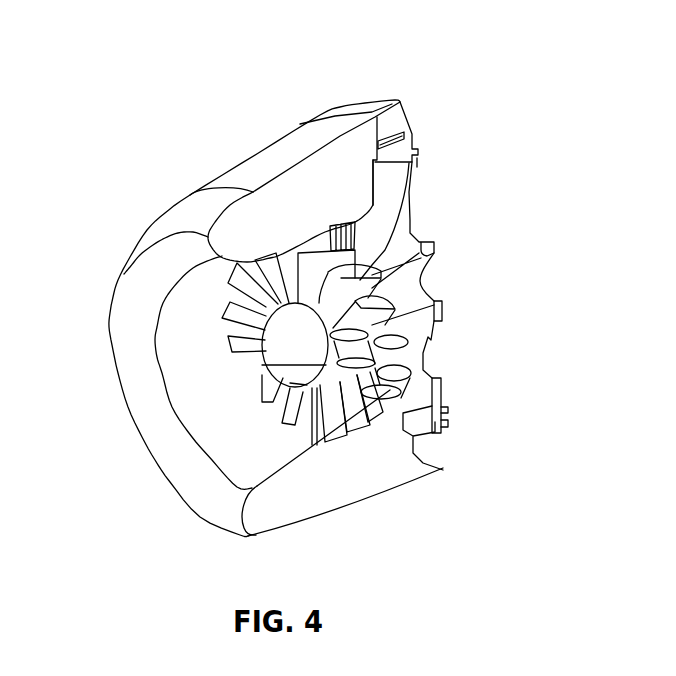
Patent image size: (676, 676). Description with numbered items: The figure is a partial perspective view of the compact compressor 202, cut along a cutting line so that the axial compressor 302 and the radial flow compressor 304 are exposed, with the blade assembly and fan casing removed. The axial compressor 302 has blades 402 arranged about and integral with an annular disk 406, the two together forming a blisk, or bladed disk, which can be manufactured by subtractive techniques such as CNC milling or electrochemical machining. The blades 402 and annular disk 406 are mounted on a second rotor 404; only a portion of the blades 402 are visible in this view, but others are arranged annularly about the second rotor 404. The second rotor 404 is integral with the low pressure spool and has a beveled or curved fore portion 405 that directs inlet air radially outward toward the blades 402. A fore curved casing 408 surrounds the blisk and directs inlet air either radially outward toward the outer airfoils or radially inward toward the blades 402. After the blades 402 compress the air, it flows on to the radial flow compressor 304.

The compact compressor 202 is at (471, 55).
The axial compressor 302 is at (380, 452).
The radial flow compressor 304 is at (430, 185).
The blades 402 is at (408, 336).
The second rotor 404 is at (280, 337).
The fore portion 405 is at (262, 379).
The annular disk 406 is at (442, 310).
The fore curved casing 408 is at (153, 247).